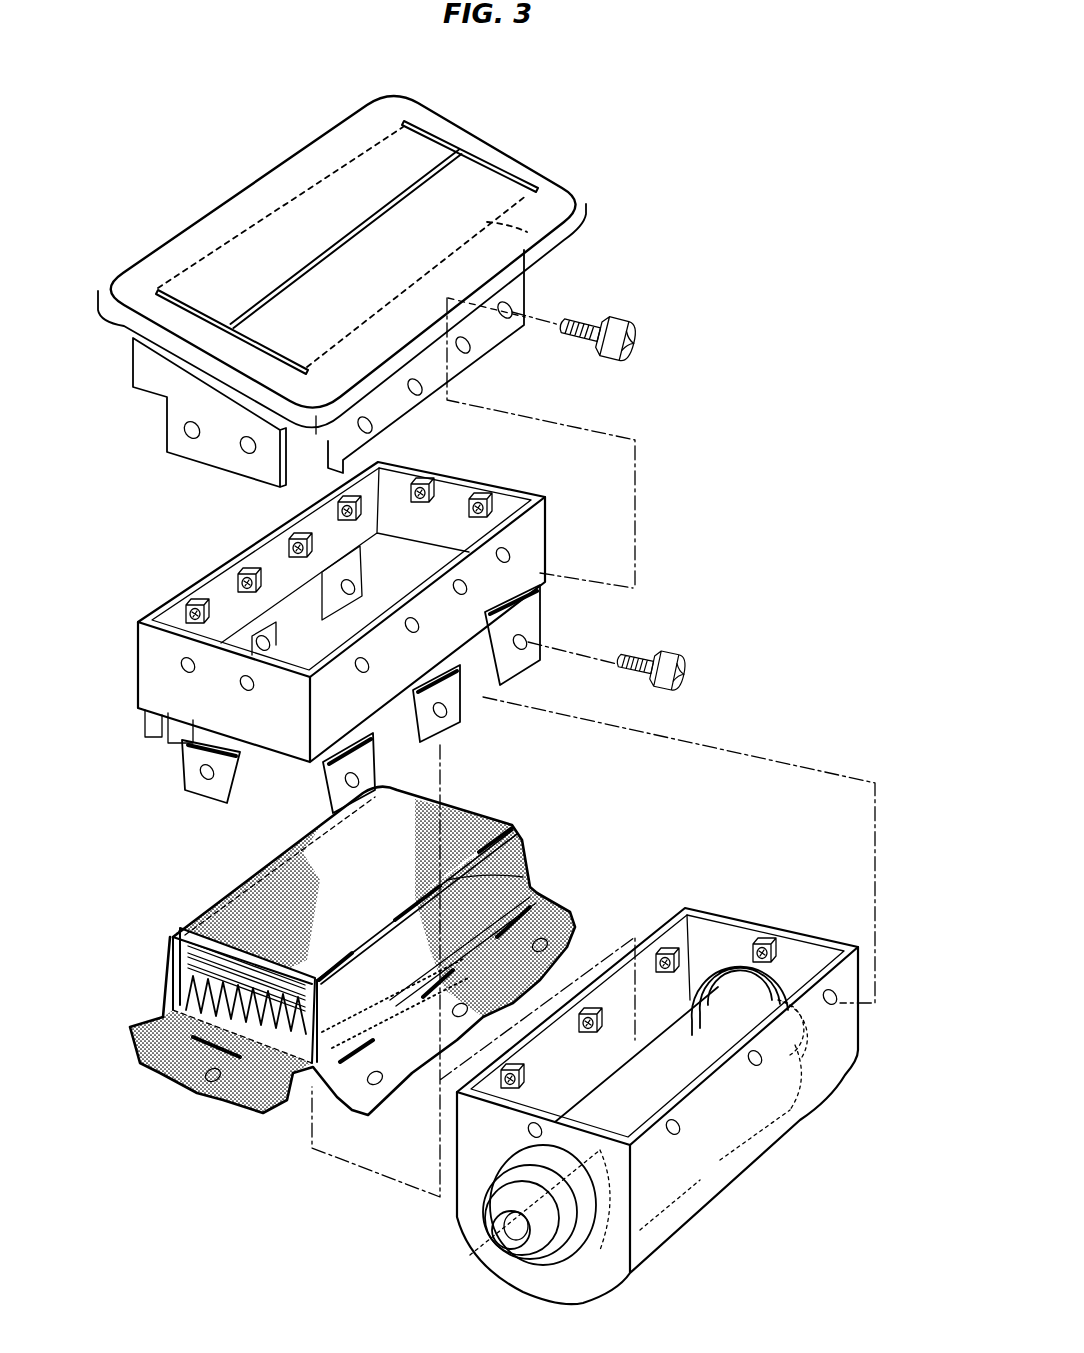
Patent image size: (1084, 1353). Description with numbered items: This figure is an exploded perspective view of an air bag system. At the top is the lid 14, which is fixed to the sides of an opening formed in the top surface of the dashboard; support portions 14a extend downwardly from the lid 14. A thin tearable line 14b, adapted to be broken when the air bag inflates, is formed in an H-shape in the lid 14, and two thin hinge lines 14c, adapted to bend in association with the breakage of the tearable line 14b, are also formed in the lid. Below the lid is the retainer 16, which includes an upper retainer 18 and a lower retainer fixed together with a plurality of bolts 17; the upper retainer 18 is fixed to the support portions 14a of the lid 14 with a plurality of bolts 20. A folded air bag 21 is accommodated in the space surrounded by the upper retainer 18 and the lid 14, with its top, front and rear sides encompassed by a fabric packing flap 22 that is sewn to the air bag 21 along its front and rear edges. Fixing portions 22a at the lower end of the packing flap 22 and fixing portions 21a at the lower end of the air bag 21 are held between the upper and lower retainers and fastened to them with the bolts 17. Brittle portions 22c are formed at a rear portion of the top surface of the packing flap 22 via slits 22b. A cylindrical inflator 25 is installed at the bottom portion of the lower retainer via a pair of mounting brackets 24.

The lid 14 is at (578, 180).
The support portions 14a is at (223, 443).
The tearable line 14b is at (373, 218).
The hinge lines 14c is at (250, 226).
The retainer 16 is at (740, 1175).
The bolts 17 is at (683, 680).
The upper retainer 18 is at (548, 588).
The bolts 20 is at (632, 340).
The air bag 21 is at (273, 1050).
The fixing portions 21a is at (230, 1093).
The packing flap 22 is at (490, 816).
The fixing portions 22a is at (567, 932).
The slits 22b is at (484, 852).
The brittle portions 22c is at (507, 873).
The mounting brackets 24 is at (712, 1007).
The inflator 25 is at (650, 1080).